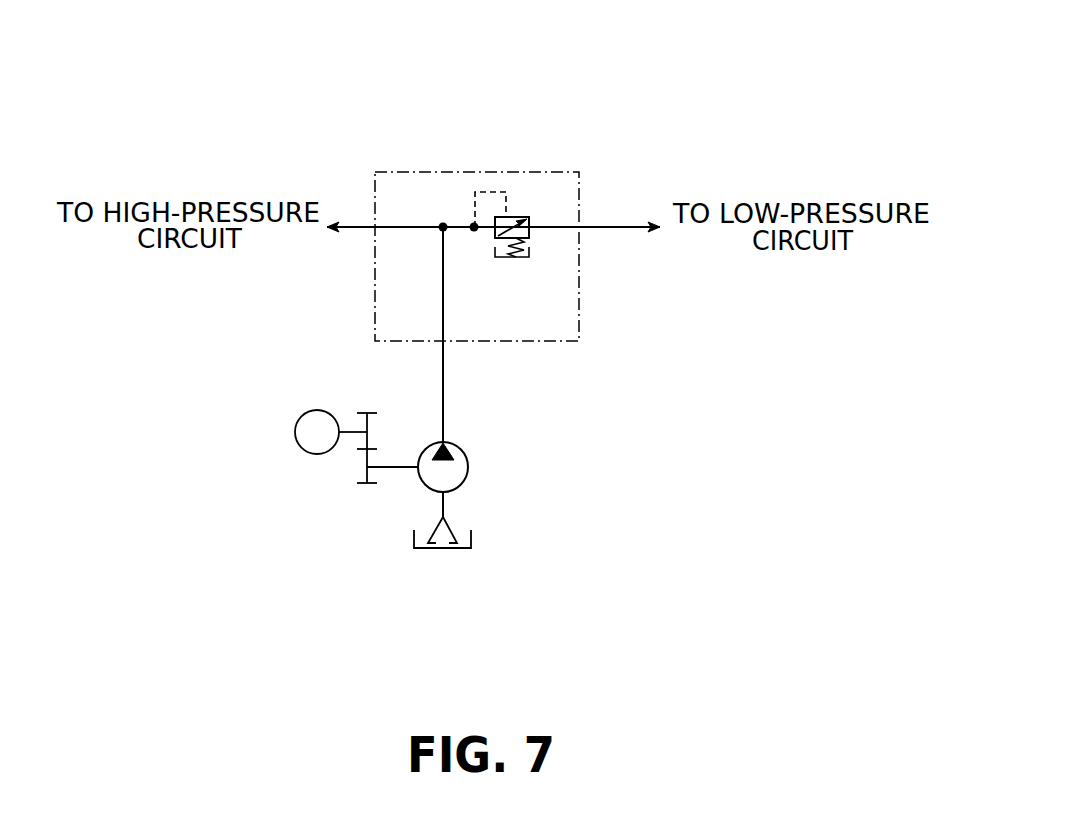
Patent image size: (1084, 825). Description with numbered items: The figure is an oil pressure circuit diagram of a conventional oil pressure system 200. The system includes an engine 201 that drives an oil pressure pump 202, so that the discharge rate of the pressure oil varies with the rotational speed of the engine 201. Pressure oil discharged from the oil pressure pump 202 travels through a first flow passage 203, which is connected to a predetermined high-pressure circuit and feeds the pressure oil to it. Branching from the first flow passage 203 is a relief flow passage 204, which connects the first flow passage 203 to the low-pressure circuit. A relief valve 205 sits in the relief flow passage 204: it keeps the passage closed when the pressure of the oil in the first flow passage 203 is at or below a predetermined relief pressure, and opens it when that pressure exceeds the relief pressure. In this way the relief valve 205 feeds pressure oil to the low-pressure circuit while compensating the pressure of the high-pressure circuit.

The oil pressure system 200 is at (357, 107).
The engine 201 is at (305, 412).
The oil pressure pump 202 is at (468, 467).
The first flow passage 203 is at (445, 302).
The relief flow passage 204 is at (458, 227).
The relief valve 205 is at (520, 217).